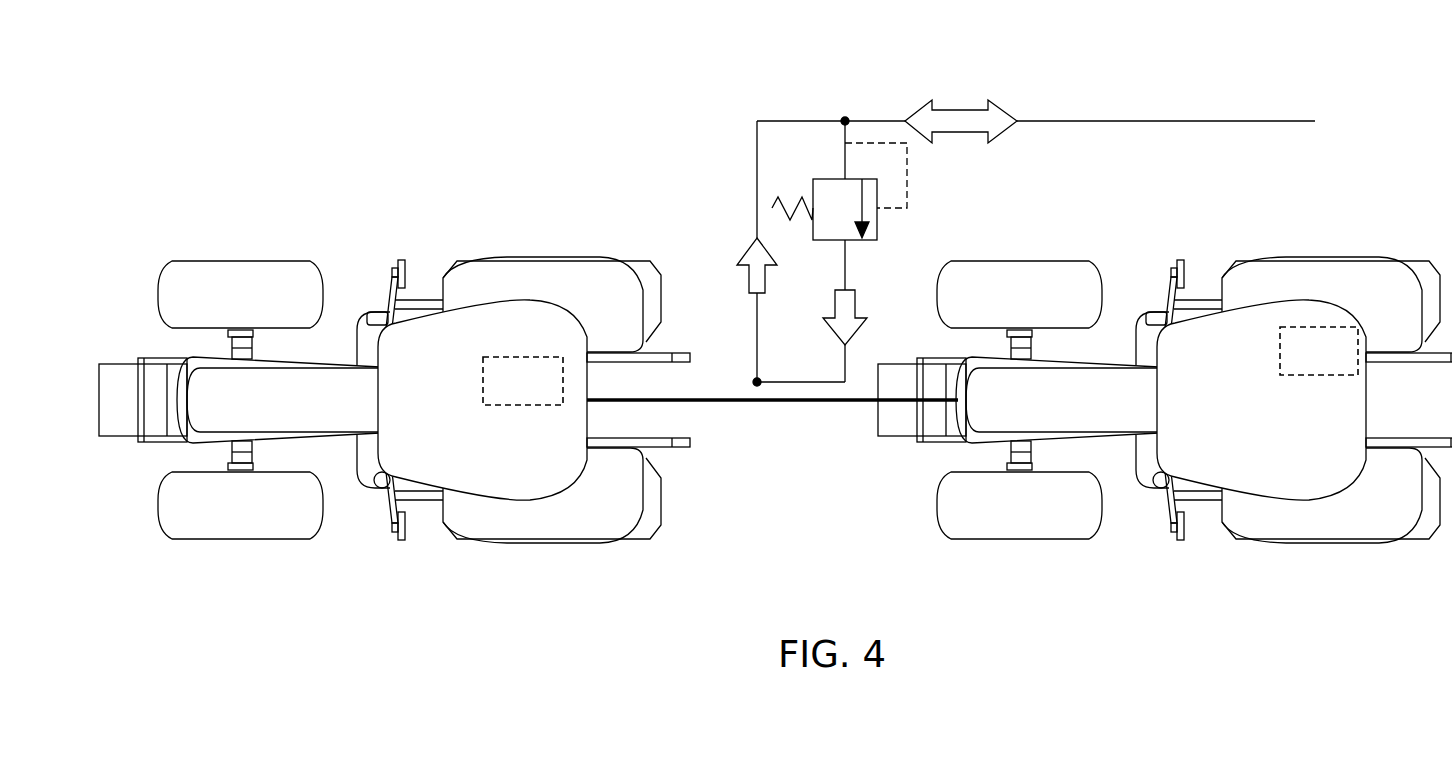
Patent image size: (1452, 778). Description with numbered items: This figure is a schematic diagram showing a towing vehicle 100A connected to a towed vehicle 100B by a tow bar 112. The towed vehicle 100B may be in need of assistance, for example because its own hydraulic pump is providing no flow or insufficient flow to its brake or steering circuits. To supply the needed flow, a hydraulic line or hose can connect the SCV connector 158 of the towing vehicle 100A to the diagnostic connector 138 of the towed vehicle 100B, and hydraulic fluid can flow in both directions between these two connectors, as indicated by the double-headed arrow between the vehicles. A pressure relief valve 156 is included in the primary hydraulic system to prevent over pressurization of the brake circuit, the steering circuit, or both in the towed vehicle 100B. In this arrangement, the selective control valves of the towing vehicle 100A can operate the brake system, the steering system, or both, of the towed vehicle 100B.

The towing vehicle 100A is at (287, 112).
The towed vehicle 100B is at (1070, 84).
The tow bar 112 is at (820, 402).
The diagnostic connector 138 is at (1315, 121).
The pressure relief valve 156 is at (877, 228).
The SCV connector 158 is at (757, 382).